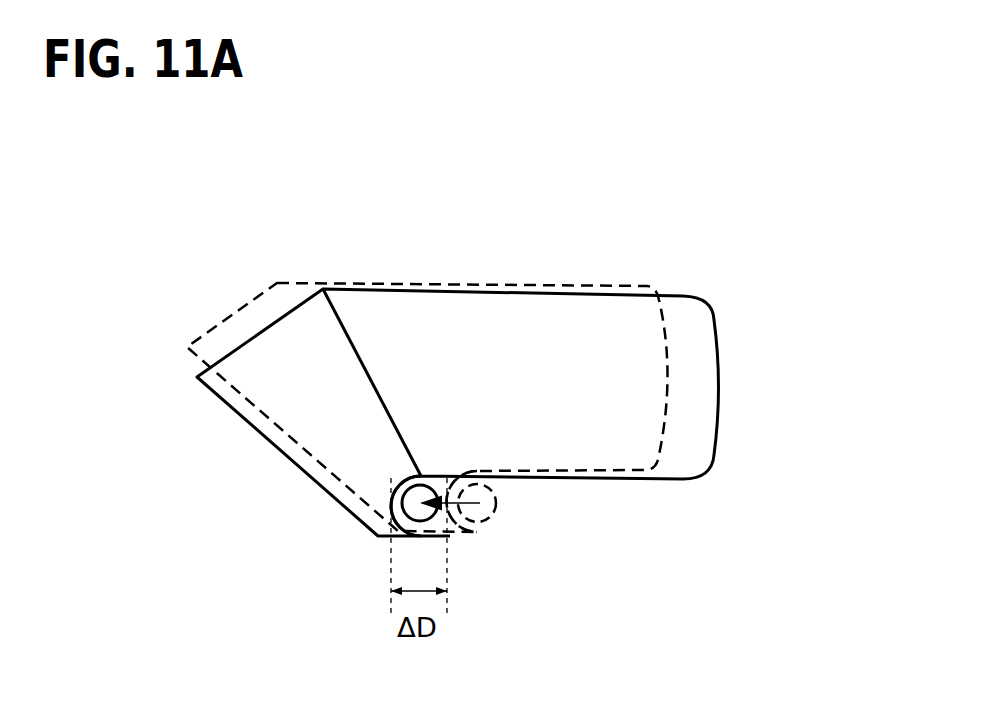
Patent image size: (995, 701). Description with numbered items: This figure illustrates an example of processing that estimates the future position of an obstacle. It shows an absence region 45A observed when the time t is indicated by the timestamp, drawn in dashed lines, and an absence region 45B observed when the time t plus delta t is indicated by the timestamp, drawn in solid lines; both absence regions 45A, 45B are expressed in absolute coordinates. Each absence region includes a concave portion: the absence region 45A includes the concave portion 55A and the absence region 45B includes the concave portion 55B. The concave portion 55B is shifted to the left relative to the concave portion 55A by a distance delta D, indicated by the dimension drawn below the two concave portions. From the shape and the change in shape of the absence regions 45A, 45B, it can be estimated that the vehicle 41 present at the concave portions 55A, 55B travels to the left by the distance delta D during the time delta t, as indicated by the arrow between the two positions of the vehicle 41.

The vehicle 41 is at (420, 477).
The absence region 45A is at (243, 303).
The absence region 45B is at (291, 310).
The concave portion 55A is at (447, 468).
The concave portion 55B is at (393, 488).